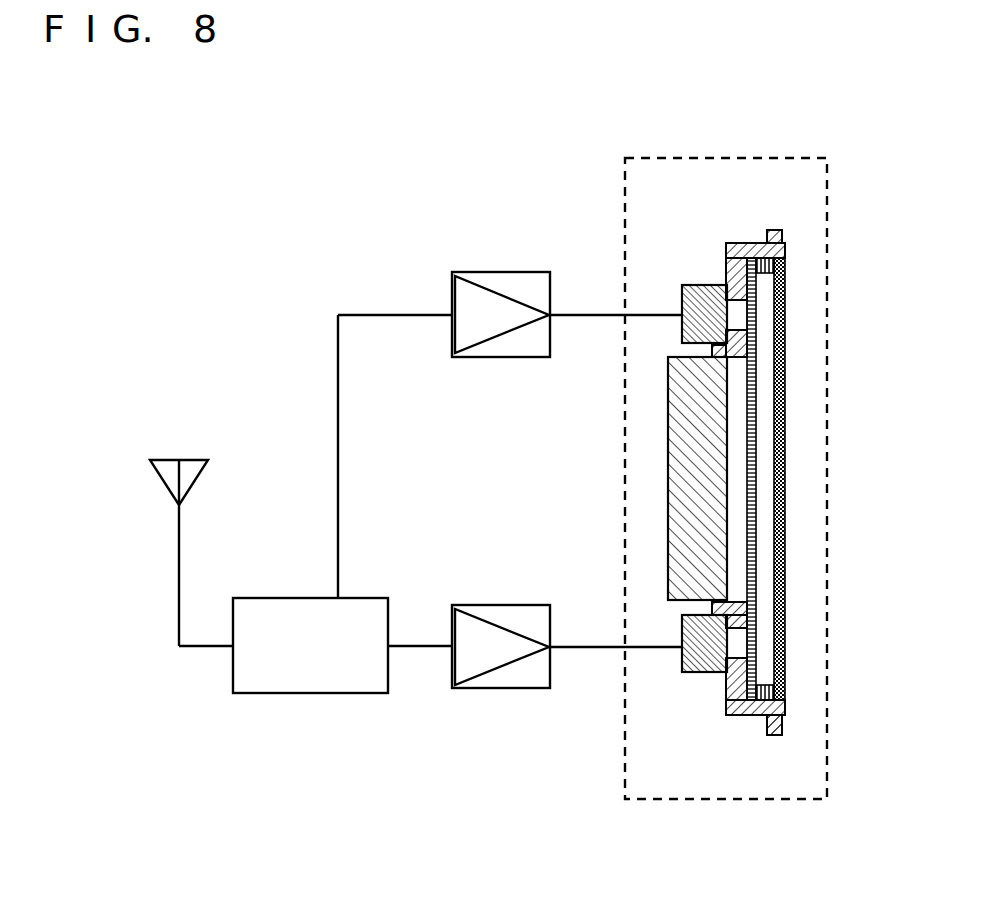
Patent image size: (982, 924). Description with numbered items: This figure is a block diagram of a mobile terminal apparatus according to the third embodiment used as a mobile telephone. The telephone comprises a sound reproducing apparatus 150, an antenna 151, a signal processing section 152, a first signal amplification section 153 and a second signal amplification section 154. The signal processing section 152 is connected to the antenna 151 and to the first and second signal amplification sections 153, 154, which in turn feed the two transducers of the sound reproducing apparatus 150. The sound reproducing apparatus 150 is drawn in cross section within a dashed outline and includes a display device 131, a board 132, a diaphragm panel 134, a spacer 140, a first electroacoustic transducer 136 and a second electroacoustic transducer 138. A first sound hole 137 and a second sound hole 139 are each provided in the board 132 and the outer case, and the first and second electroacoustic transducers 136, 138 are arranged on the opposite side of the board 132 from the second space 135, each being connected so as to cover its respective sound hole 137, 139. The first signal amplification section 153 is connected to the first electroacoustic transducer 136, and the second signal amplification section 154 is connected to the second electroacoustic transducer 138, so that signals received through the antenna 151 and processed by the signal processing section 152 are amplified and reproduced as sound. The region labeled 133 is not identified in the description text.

The display device 131 is at (681, 463).
The board 132 is at (754, 387).
The gap 133 is at (735, 551).
The diaphragm panel 134 is at (786, 506).
The second space 135 is at (764, 462).
The first electroacoustic transducer 136 is at (682, 672).
The first sound hole 137 is at (740, 643).
The second electroacoustic transducer 138 is at (682, 291).
The second sound hole 139 is at (742, 315).
The spacer 140 is at (775, 697).
The sound reproducing apparatus 150 is at (740, 158).
The antenna 151 is at (200, 460).
The signal processing section 152 is at (316, 694).
The first signal amplification section 153 is at (513, 690).
The second signal amplification section 154 is at (513, 357).